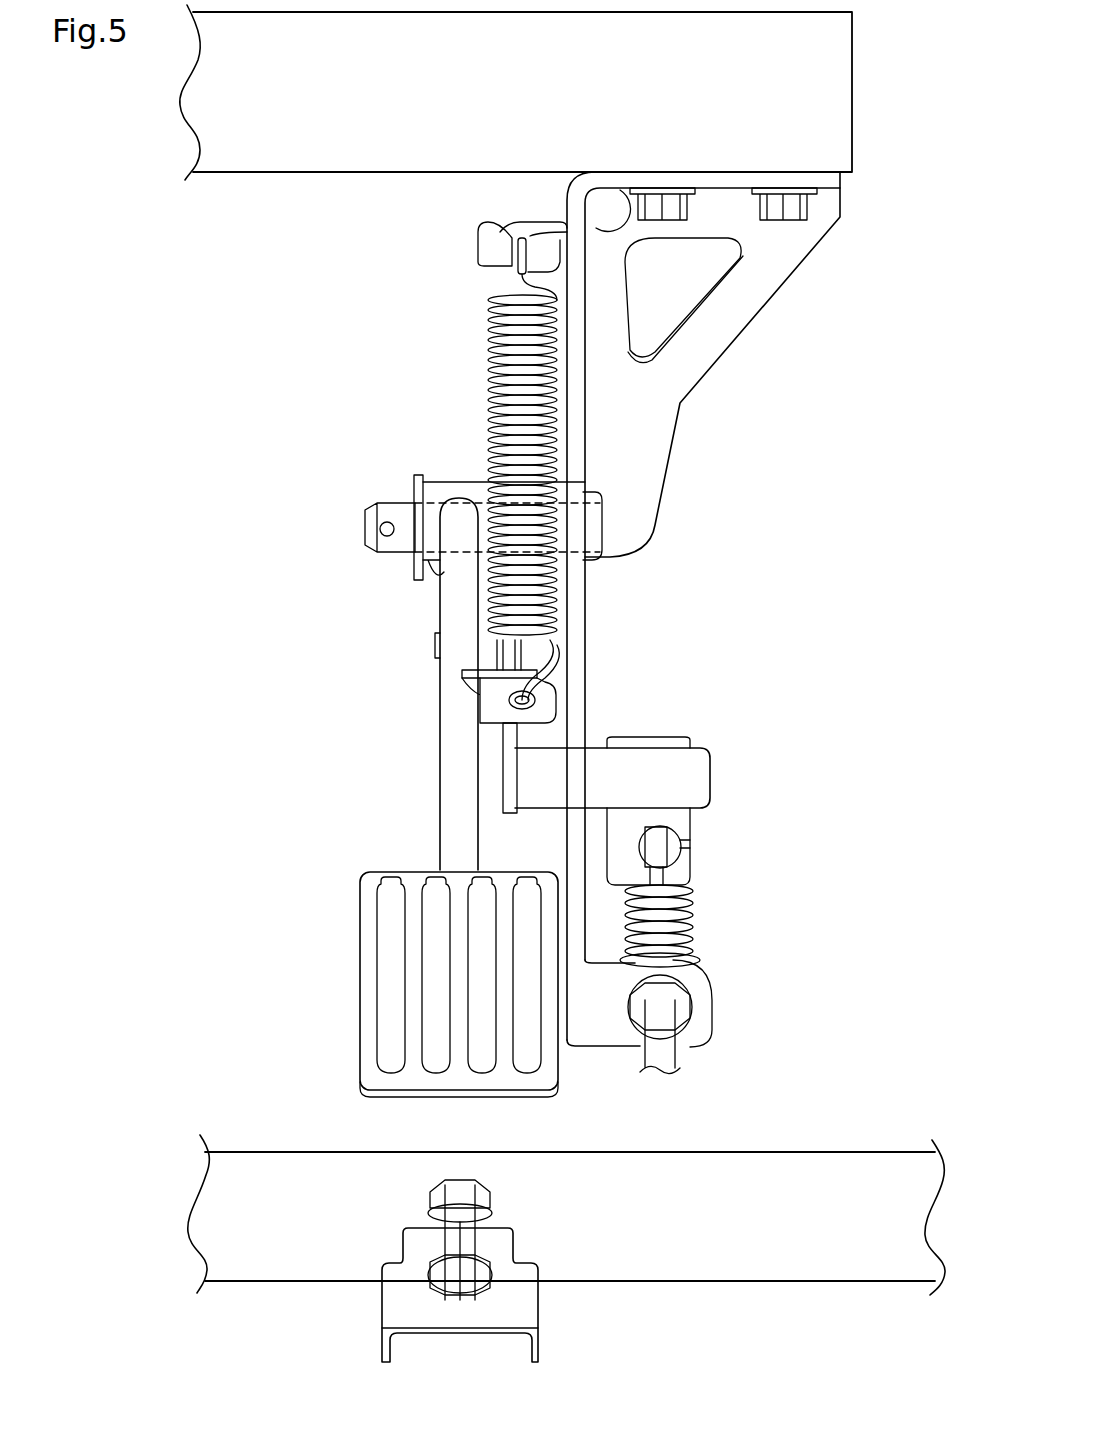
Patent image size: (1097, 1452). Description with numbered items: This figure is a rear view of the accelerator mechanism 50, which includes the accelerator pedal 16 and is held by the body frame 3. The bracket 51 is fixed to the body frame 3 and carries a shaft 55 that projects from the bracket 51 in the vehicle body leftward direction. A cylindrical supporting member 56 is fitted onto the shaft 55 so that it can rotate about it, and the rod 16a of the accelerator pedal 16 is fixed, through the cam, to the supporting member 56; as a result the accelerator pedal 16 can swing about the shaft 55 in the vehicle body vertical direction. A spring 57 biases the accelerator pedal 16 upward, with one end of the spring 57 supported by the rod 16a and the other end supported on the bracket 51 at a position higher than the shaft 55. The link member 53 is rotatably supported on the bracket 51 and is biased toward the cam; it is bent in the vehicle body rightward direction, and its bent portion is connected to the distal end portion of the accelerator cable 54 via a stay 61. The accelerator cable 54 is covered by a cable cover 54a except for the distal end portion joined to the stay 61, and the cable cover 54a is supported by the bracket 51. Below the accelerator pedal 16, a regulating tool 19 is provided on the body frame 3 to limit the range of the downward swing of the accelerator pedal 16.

The body frame 3 is at (848, 108).
The accelerator mechanism 50 is at (806, 530).
The bracket 51 is at (585, 650).
The link member 53 is at (500, 786).
The accelerator cable 54 is at (660, 874).
The cable cover 54a is at (665, 1050).
The shaft 55 is at (395, 550).
The supporting member 56 is at (458, 490).
The spring 57 is at (490, 376).
The stay 61 is at (680, 826).
The accelerator pedal 16 is at (367, 994).
The rod 16a is at (446, 732).
The regulating tool 19 is at (457, 1185).